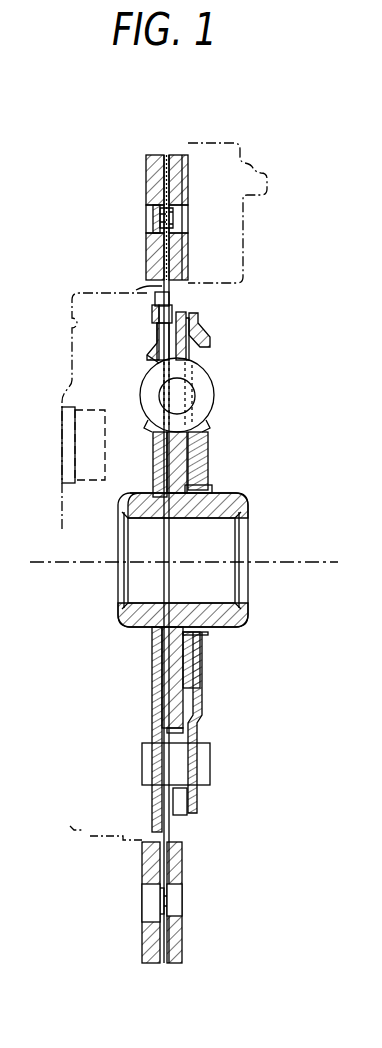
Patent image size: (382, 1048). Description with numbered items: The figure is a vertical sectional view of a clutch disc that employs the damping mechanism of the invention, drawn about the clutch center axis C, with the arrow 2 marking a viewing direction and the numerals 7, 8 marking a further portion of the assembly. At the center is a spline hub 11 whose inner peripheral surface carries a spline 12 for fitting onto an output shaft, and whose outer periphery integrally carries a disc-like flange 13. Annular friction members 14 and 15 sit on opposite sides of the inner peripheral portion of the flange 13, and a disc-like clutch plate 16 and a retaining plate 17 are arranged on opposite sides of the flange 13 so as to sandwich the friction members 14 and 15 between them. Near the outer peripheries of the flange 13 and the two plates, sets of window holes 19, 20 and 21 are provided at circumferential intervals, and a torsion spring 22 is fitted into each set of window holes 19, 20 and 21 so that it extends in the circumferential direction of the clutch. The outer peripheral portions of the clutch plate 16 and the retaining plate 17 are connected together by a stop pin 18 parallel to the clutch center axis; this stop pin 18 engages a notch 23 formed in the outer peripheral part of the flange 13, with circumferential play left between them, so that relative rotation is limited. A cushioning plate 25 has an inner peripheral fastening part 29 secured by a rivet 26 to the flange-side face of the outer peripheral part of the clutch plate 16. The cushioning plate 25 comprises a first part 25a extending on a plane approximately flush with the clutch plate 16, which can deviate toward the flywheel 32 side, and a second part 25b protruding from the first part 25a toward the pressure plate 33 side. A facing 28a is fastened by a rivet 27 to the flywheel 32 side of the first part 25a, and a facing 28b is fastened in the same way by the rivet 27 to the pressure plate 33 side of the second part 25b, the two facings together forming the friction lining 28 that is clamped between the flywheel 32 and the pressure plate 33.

The arrow indicating direction of view 2 is at (258, 507).
The slide rail 7 is at (301, 241).
The slide rail 8 is at (317, 241).
The spline hub 11 is at (132, 498).
The spline 12 is at (194, 520).
The flange 13 is at (192, 313).
The friction member 14 is at (158, 660).
The friction member 15 is at (208, 651).
The clutch plate 16 is at (156, 346).
The retaining plate 17 is at (205, 466).
The stop pin 18 is at (208, 785).
The window hole 19 is at (192, 346).
The window hole 20 is at (144, 360).
The window hole 21 is at (214, 356).
The torsion spring 22 is at (214, 392).
The notch 23 is at (184, 814).
The cushioning plate 25 is at (153, 191).
The first part 25a is at (162, 186).
The second part 25b is at (174, 869).
The rivet 26 is at (150, 300).
The rivet 27 is at (156, 214).
The guide block 28 is at (166, 512).
The facing 28a is at (158, 148).
The facing 28b is at (160, 173).
The inner peripheral fastening part 29 is at (132, 285).
The flywheel 32 is at (64, 336).
The pressure plate 33 is at (248, 155).
The centre line C is at (305, 562).